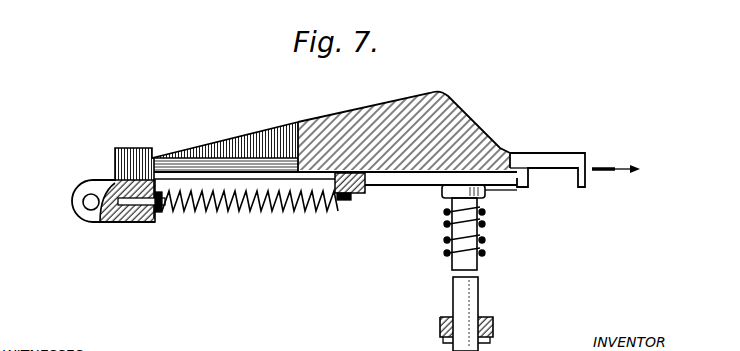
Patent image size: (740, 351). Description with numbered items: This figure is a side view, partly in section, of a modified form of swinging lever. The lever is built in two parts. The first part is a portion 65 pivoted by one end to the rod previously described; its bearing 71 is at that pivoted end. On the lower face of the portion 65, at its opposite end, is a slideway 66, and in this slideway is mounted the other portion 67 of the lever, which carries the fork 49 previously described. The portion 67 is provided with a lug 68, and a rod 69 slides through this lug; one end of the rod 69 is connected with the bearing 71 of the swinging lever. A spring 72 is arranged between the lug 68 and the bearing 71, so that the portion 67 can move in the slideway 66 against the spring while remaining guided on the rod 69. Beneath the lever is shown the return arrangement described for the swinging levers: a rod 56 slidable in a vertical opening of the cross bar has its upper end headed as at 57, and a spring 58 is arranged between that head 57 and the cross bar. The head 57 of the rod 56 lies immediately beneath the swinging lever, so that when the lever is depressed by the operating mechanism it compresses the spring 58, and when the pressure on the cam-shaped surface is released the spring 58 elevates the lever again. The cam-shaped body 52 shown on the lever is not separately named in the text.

The fork 49 is at (582, 166).
The cam 52 is at (398, 103).
The rod 56 is at (462, 288).
The head 57 is at (440, 194).
The spring 58 is at (487, 250).
The portion of swinging lever 65 is at (222, 138).
The slideway 66 is at (503, 190).
The sliding portion of swinging lever 67 is at (513, 175).
The lug 68 is at (350, 207).
The rod 69 is at (273, 213).
The bearing 71 is at (143, 224).
The spring 72 is at (225, 214).